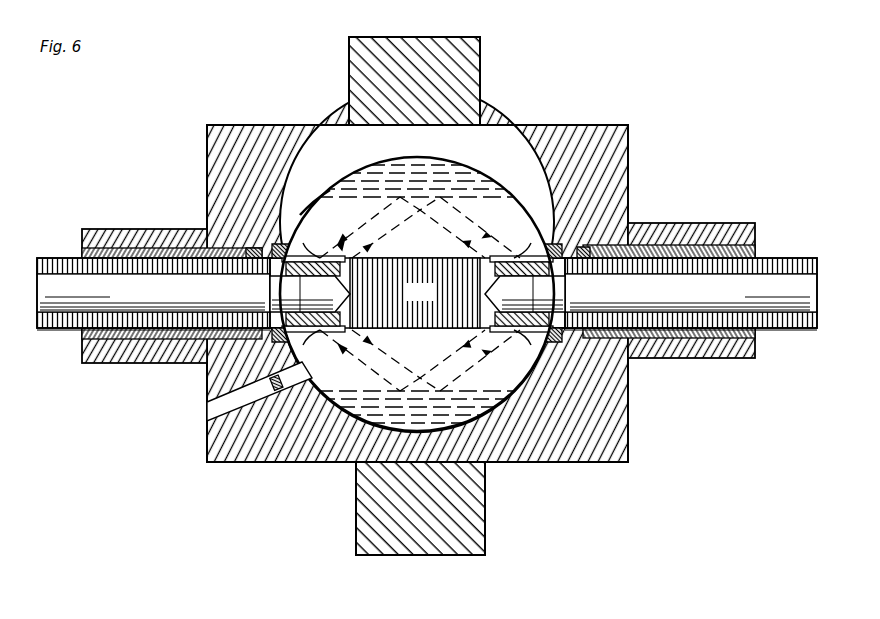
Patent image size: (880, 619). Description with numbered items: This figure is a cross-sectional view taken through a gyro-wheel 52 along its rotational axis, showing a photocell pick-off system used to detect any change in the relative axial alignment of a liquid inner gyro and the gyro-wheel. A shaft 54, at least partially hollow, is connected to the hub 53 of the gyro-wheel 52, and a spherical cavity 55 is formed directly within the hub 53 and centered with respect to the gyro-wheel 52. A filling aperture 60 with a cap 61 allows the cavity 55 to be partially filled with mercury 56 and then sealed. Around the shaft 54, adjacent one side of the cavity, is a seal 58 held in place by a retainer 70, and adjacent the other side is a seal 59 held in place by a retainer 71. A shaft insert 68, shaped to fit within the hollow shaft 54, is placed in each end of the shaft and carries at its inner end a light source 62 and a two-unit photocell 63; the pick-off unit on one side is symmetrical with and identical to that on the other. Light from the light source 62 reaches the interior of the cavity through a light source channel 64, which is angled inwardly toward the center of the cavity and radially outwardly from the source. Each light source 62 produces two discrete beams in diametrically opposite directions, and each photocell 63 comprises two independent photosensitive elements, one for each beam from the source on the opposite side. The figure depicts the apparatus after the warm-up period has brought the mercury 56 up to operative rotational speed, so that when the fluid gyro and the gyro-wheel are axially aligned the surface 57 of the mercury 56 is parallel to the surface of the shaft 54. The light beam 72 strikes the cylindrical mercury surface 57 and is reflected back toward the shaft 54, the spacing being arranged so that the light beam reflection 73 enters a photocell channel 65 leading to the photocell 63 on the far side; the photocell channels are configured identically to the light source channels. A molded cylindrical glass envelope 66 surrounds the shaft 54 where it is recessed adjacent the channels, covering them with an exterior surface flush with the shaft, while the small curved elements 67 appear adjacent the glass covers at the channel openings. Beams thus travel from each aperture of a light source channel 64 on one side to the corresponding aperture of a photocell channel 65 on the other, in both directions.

The gyro-wheel 52 is at (352, 47).
The hub 53 is at (528, 125).
The shaft 54 is at (60, 266).
The spherical cavity 55 is at (311, 214).
The mercury 56 is at (378, 178).
The mercury surface 57 is at (505, 171).
The seal 58 is at (585, 248).
The seal 59 is at (258, 249).
The filling aperture 60 is at (210, 412).
The cap 61 is at (271, 391).
The light source 62 is at (446, 290).
The photocell 63 is at (271, 290).
The light source channel 64 is at (340, 270).
The photocell channel 65 is at (285, 250).
The glass envelope 66 is at (348, 258).
The channel 67 is at (320, 258).
The shaft insert 68 is at (80, 320).
The retainer 70 is at (713, 247).
The retainer 71 is at (128, 255).
The light beam 72 is at (444, 225).
The light beam reflection 73 is at (372, 224).